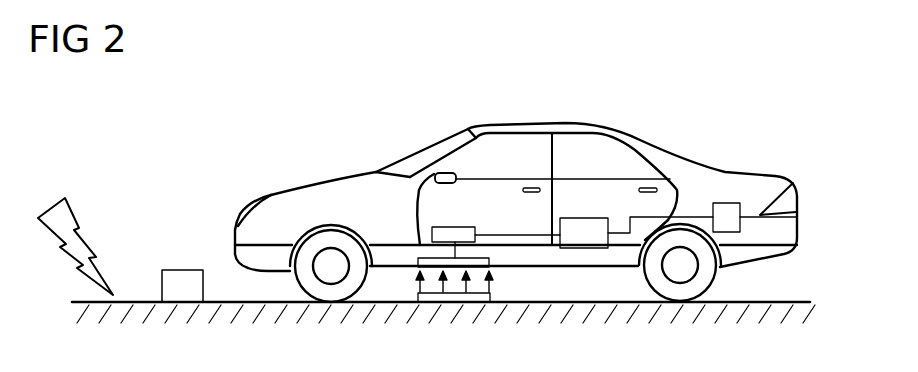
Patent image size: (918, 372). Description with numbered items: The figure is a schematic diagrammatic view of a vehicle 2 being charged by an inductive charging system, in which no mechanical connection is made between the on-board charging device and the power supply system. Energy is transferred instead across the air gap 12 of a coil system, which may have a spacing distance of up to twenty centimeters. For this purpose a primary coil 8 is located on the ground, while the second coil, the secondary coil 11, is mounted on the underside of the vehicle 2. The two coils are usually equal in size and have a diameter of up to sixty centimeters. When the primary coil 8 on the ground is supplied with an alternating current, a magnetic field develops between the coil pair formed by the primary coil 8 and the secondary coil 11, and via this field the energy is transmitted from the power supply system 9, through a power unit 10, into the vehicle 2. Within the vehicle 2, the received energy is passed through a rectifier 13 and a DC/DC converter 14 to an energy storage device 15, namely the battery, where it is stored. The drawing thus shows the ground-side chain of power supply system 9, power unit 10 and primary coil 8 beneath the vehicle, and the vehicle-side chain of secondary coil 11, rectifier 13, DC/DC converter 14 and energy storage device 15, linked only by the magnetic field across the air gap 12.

The vehicle 2 is at (553, 122).
The primary coil 8 is at (455, 302).
The power supply system 9 is at (72, 203).
The power unit 10 is at (185, 270).
The secondary coil 11 is at (418, 262).
The air gap 12 is at (490, 290).
The rectifier 13 is at (458, 227).
The DC/DC converter 14 is at (583, 218).
The energy storage device 15 is at (725, 203).